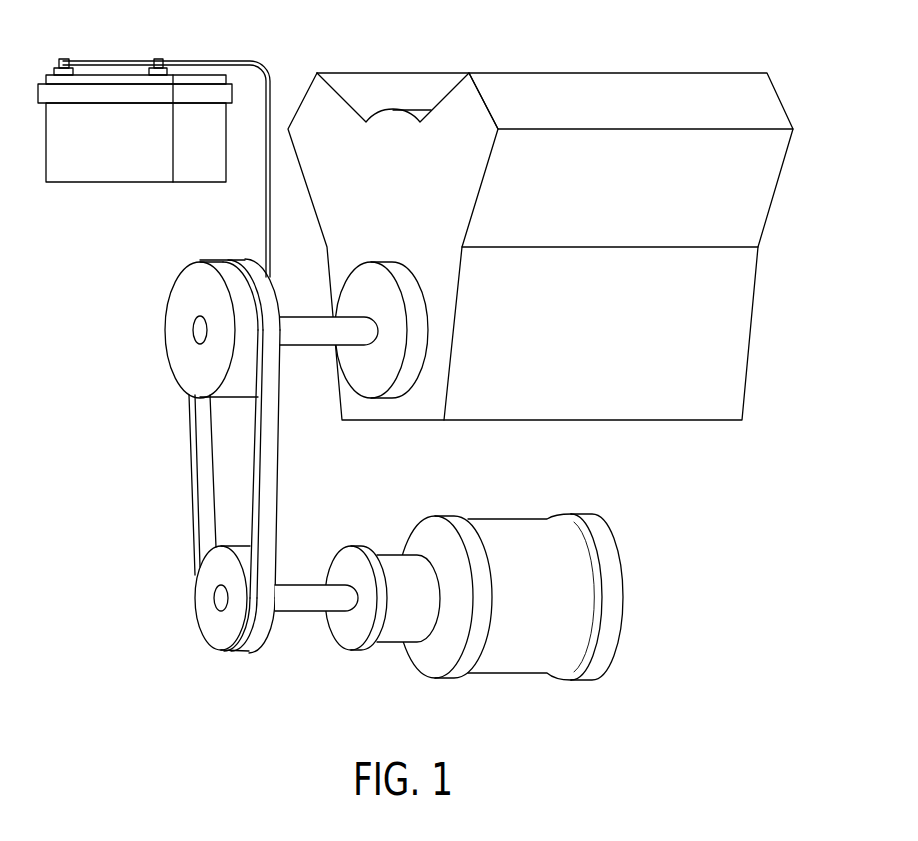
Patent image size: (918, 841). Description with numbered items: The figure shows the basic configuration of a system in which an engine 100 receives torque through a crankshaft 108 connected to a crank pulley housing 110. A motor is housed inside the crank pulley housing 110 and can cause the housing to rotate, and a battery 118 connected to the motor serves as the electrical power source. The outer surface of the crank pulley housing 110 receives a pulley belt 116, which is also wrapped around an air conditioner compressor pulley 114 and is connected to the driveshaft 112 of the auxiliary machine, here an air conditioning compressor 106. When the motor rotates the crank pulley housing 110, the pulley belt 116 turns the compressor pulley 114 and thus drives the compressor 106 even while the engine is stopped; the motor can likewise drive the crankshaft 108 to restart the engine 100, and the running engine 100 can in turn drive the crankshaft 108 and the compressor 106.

The engine 100 is at (755, 193).
The air conditioning compressor 106 is at (577, 565).
The crankshaft 108 is at (325, 333).
The crank pulley housing 110 is at (190, 293).
The driveshaft 112 is at (305, 598).
The air conditioner compressor pulley 114 is at (215, 628).
The pulley belt 116 is at (200, 472).
The battery 118 is at (130, 82).